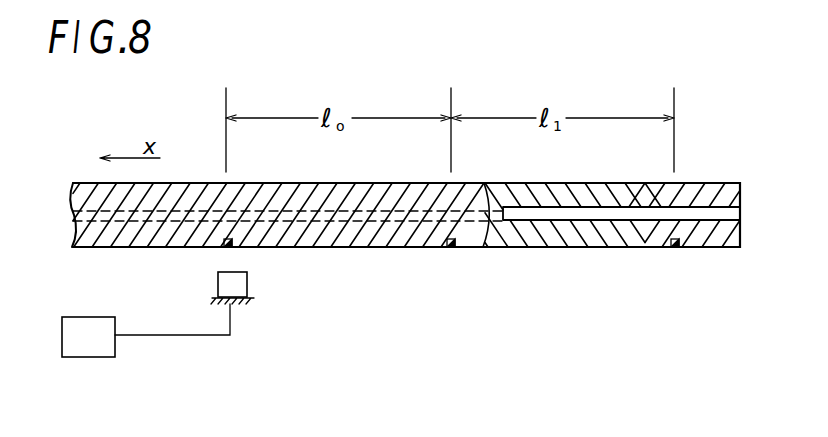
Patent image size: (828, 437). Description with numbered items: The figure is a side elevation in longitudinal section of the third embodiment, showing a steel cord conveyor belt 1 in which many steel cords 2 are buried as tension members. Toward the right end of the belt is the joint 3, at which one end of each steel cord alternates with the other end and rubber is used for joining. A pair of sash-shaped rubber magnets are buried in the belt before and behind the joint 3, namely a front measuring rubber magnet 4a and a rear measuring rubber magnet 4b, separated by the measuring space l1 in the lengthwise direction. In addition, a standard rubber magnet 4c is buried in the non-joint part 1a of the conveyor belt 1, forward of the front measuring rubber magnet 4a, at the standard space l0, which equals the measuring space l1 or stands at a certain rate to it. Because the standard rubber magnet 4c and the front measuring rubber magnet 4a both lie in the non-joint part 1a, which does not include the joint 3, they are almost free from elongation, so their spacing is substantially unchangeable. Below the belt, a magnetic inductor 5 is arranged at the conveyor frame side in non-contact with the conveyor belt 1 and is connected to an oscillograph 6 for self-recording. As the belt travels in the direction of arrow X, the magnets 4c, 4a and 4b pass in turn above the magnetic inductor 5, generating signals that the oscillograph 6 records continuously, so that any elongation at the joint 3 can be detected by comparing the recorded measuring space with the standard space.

The steel cord conveyor belt 1 is at (365, 178).
The non-joint part 1a is at (274, 182).
The steel cord 2 is at (183, 211).
The joint 3 is at (562, 187).
The front measuring rubber magnet 4a is at (452, 248).
The rear measuring rubber magnet 4b is at (674, 248).
The standard rubber magnet 4c is at (228, 246).
The magnetic inductor 5 is at (247, 279).
The oscillograph 6 is at (115, 345).